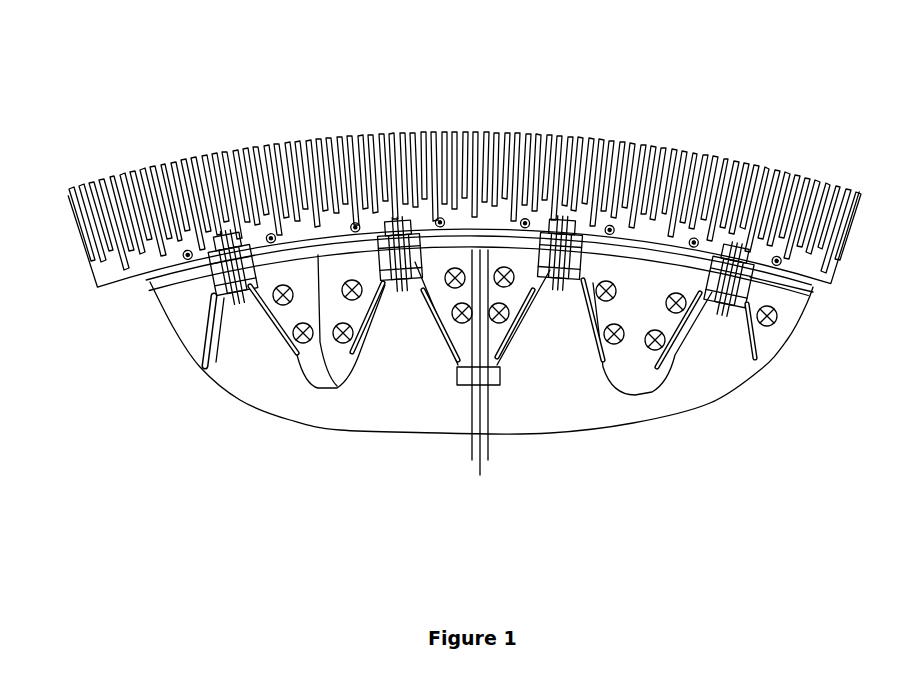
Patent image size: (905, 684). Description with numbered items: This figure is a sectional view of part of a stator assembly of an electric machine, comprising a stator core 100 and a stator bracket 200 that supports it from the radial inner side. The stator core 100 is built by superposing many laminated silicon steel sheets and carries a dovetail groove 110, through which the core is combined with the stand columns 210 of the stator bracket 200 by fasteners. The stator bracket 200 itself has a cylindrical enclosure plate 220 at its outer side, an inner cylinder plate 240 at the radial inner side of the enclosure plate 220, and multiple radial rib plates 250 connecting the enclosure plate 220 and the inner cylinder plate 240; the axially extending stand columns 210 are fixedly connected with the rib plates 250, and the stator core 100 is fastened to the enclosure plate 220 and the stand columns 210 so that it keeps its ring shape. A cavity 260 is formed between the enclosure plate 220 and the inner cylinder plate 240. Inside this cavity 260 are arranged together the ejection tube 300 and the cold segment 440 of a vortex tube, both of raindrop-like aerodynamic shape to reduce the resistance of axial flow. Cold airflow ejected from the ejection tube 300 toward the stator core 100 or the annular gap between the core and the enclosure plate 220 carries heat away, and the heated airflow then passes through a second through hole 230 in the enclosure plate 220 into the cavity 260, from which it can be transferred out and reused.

The stator core 100 is at (88, 158).
The dovetail groove 110 is at (813, 292).
The stator bracket 200 is at (184, 405).
The stand columns 210 is at (207, 278).
The enclosure plate 220 is at (340, 390).
The second through hole 230 is at (717, 307).
The inner cylinder plate 240 is at (642, 424).
The radial rib plates 250 is at (757, 370).
The cavity 260 is at (313, 368).
The ejection tube 300 is at (528, 350).
The cold segment 440 is at (458, 365).